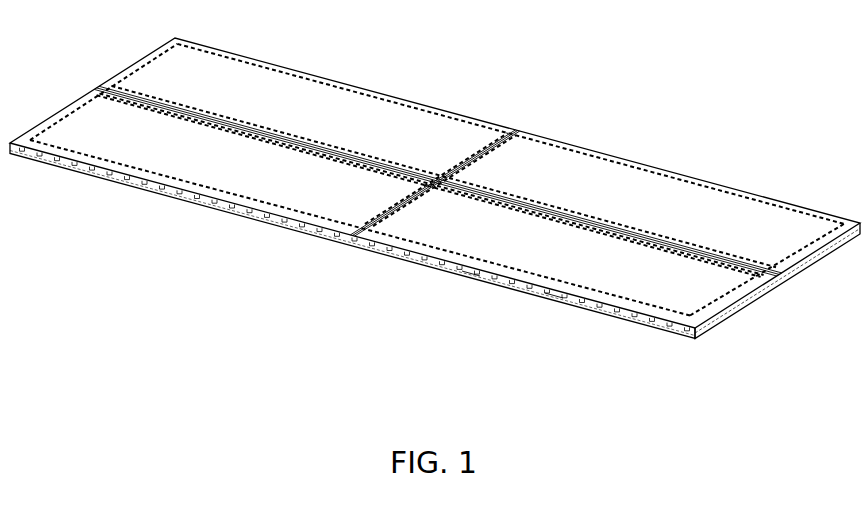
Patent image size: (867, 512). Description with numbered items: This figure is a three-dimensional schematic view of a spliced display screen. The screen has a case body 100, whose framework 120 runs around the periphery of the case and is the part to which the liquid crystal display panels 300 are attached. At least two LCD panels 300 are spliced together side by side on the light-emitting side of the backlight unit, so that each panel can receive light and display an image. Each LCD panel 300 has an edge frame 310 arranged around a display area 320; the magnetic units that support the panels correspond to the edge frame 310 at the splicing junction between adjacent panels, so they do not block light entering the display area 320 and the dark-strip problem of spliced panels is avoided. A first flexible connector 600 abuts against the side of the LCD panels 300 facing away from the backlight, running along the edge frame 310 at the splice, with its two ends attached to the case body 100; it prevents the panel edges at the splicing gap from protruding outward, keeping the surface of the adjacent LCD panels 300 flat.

The case body 100 is at (160, 193).
The framework 120 is at (104, 171).
The liquid crystal display panel 300 is at (250, 190).
The edge frame 310 is at (470, 271).
The display area 320 is at (553, 274).
The first flexible connector 600 is at (353, 237).